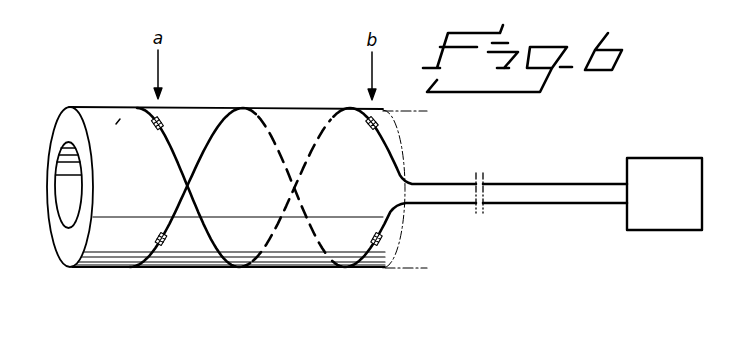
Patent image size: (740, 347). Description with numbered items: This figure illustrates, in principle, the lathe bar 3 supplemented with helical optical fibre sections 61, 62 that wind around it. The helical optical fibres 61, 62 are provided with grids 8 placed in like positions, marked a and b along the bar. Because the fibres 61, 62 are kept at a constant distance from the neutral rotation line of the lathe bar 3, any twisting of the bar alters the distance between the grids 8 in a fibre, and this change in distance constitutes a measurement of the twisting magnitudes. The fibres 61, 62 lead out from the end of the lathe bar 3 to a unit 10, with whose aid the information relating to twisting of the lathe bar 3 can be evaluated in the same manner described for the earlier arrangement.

The lathe bar 3 is at (103, 243).
The grids 8 is at (133, 113).
The unit 10 is at (646, 203).
The helical optical fibre section 61 is at (223, 130).
The helical optical fibre section 62 is at (213, 253).